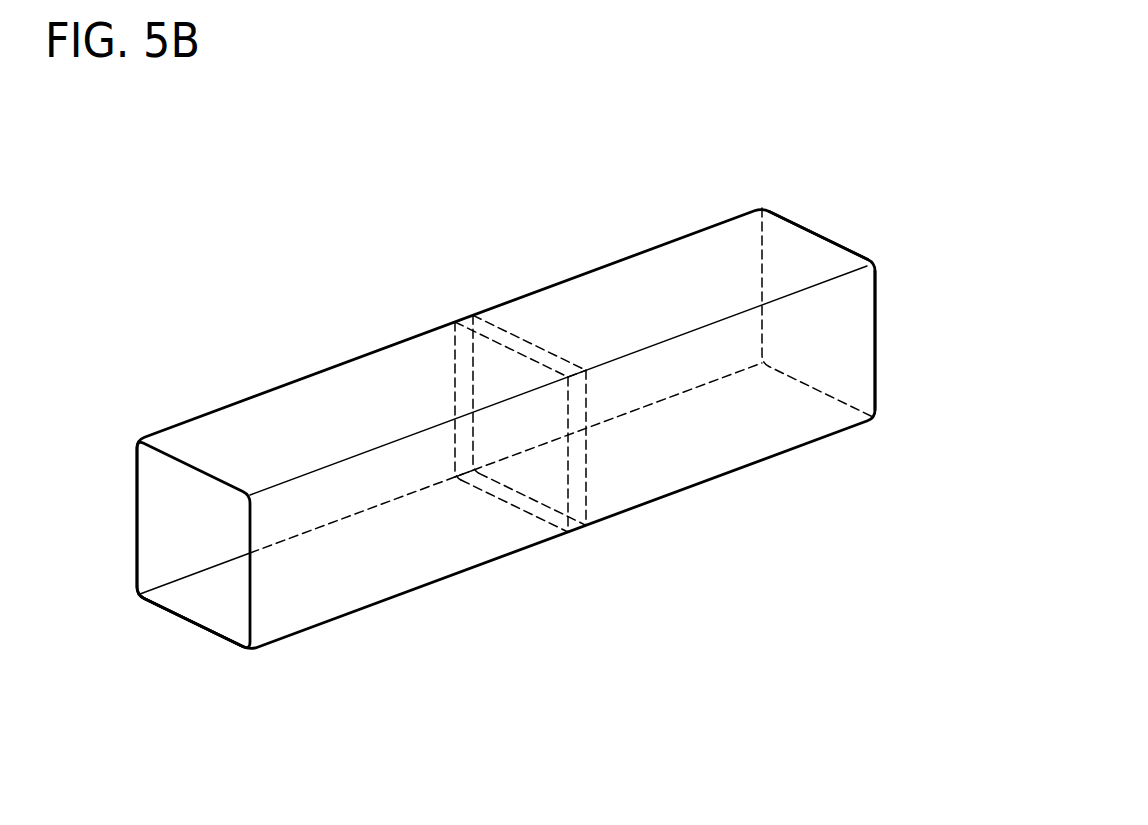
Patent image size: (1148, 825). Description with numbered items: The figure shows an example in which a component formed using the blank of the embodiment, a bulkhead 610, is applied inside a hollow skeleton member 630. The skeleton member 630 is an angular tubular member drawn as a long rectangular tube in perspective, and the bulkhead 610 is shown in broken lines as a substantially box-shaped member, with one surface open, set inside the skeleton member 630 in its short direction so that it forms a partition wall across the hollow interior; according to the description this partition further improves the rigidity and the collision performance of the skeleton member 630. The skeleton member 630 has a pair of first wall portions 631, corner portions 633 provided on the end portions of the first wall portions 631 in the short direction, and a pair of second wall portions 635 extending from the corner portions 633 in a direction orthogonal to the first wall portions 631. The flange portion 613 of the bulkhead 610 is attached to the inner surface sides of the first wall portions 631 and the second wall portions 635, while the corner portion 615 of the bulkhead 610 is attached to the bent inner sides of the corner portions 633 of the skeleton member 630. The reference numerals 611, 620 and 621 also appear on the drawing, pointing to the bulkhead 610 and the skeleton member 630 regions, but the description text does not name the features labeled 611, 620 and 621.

The skeleton member 630 is at (143, 181).
The first wall portions 631 is at (617, 278).
The corner portions 633 is at (815, 283).
The second wall portions 635 is at (153, 515).
The bottom inner edge 621 is at (163, 598).
The bulkhead 610 is at (518, 337).
The plate rear face 611 is at (492, 375).
The flange portion 613 is at (582, 488).
The corner portion 615 is at (592, 385).
The plate front face 620 is at (587, 378).